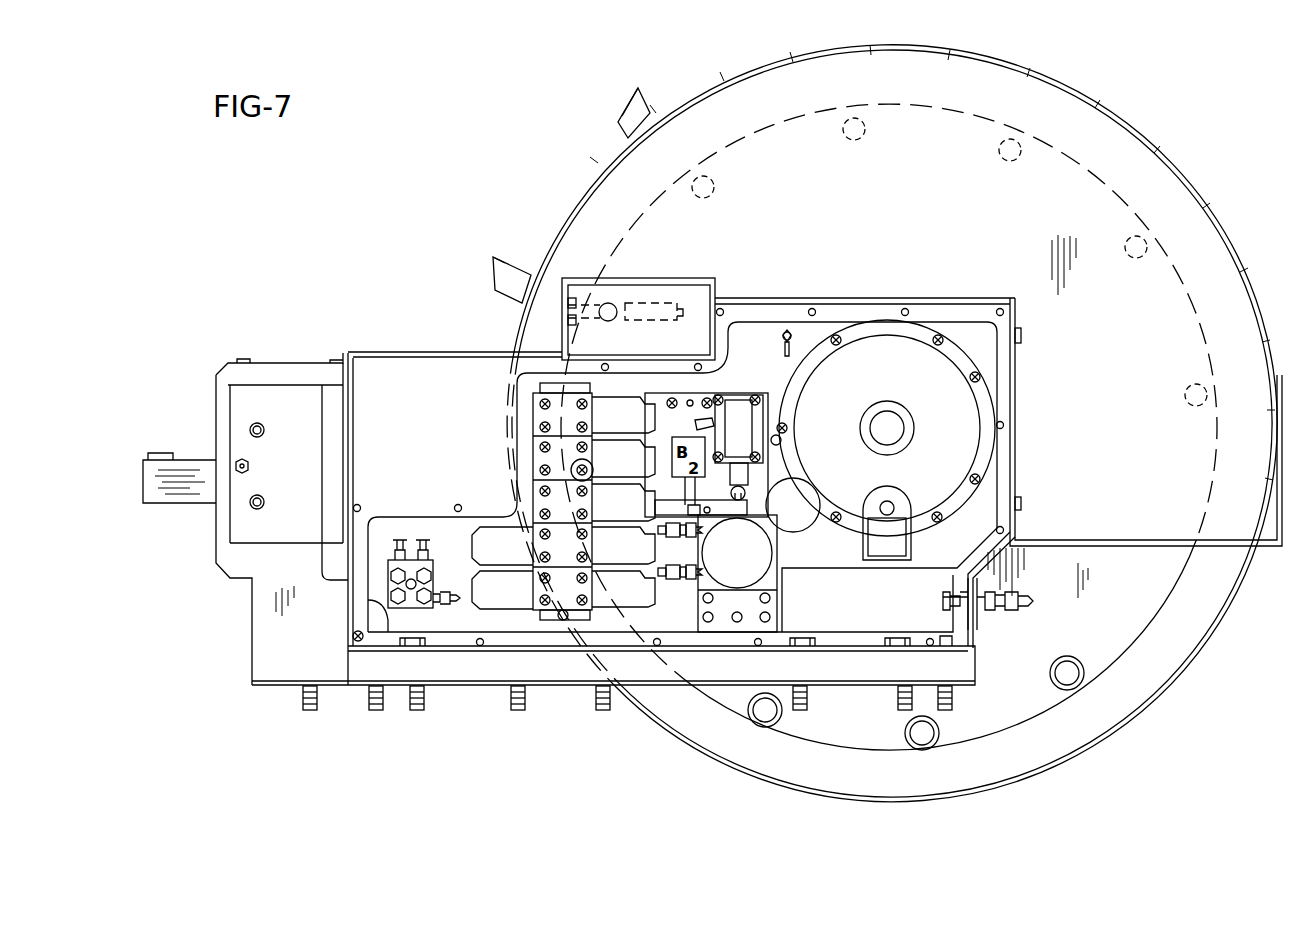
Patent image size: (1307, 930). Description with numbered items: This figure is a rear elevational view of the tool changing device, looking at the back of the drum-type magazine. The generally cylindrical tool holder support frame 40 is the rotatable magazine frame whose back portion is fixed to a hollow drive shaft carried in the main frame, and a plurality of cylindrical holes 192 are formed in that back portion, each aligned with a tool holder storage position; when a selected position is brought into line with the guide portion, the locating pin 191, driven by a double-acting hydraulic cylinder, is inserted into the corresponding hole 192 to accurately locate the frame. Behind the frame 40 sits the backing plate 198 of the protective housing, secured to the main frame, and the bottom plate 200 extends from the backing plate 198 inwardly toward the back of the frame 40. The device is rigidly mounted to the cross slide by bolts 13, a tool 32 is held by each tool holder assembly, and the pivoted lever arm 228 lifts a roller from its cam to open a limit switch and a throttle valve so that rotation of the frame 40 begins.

The bolts 13 is at (316, 712).
The tool 32 is at (180, 500).
The tool holder support frame 40 is at (1130, 686).
The locating pin 191 is at (612, 302).
The hole 192 is at (766, 726).
The backing plate 198 is at (1160, 193).
The bottom plate 200 is at (1222, 556).
The pivoted lever arm 228 is at (673, 513).